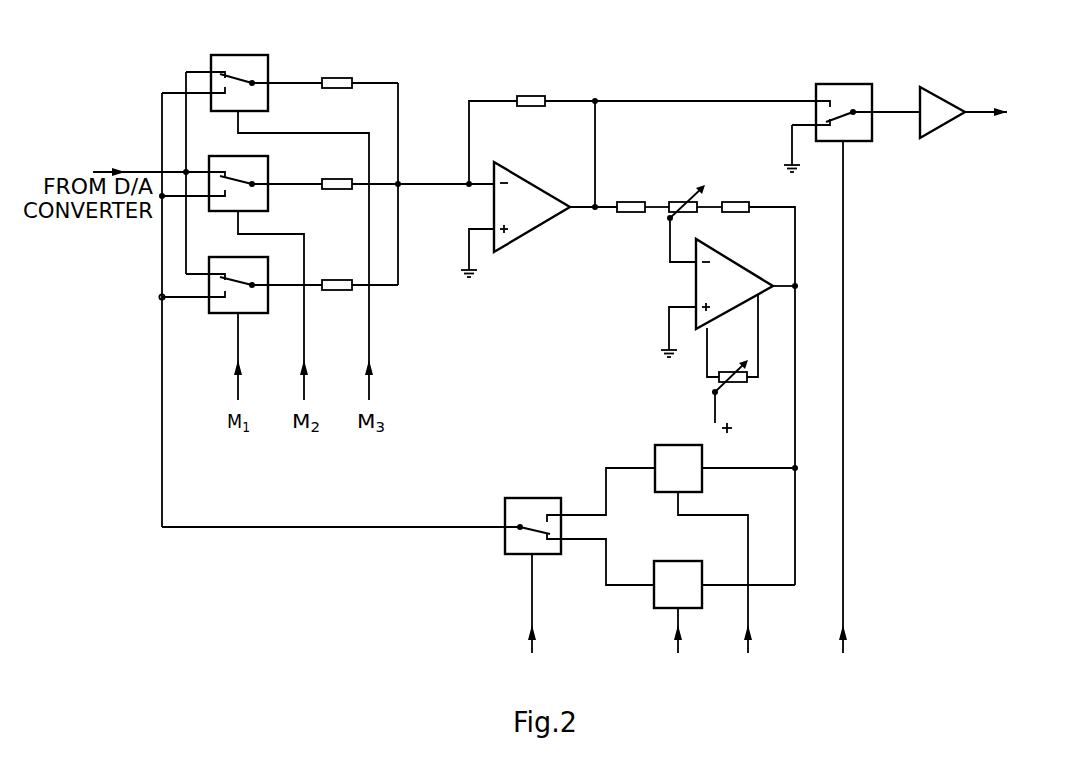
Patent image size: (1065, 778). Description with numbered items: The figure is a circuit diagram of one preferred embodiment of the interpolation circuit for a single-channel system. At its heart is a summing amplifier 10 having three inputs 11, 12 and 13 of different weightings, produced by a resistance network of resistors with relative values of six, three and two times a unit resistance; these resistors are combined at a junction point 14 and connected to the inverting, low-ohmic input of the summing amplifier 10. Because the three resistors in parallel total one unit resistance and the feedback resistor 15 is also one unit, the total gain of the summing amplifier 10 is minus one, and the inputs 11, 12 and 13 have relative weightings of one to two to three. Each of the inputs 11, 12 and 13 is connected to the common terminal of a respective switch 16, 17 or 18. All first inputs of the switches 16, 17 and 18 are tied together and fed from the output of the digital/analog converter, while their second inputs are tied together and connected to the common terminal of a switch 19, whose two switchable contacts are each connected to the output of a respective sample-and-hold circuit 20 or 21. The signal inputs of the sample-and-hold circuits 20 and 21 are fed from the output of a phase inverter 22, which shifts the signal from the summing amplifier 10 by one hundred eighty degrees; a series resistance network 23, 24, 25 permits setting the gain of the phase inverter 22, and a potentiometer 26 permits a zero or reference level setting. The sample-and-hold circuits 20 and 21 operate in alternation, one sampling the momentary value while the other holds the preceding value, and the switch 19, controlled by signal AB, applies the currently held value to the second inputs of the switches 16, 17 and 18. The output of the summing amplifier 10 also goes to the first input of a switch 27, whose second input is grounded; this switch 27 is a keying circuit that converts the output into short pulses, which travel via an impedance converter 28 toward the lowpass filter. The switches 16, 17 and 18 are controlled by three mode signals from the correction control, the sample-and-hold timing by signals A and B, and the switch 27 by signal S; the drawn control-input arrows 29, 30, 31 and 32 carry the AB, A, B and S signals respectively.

The summing amplifier 10 is at (539, 219).
The first input 11 is at (322, 78).
The second input 12 is at (322, 179).
The third input 13 is at (322, 280).
The junction point 14 is at (400, 186).
The feedback resistor 15 is at (649, 129).
The switch 16 is at (255, 54).
The switch 17 is at (237, 157).
The switch 18 is at (236, 258).
The switch 19 is at (519, 499).
The sample-and-hold circuit 20 is at (692, 445).
The sample-and-hold circuit 21 is at (692, 561).
The phase inverter 22 is at (729, 298).
The series resistance network resistor 23 is at (643, 181).
The series resistance network resistor 24 is at (692, 206).
The series resistance network resistor 25 is at (758, 368).
The potentiometer 26 is at (730, 372).
The switch 27 is at (852, 93).
The impedance converter 28 is at (940, 102).
The control input AB 29 is at (542, 619).
The control input A 30 is at (690, 646).
The control input B 31 is at (728, 588).
The control input S 32 is at (855, 413).